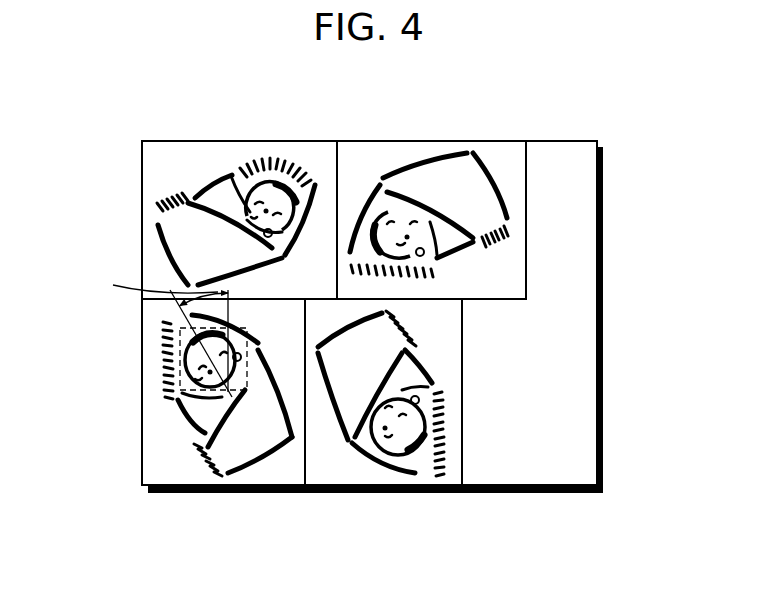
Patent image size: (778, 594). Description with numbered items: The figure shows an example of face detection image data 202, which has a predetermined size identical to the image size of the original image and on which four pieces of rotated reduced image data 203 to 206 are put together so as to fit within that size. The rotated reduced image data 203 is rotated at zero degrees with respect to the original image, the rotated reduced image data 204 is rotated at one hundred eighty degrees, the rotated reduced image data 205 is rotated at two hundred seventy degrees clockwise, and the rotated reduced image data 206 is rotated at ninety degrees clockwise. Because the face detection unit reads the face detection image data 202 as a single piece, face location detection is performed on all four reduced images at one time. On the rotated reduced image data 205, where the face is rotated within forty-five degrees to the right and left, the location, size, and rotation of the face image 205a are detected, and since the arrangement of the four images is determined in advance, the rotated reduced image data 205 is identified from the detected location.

The face detection image data 202 is at (558, 140).
The rotated reduced image data 203 is at (202, 148).
The rotated reduced image data 204 is at (432, 148).
The rotated reduced image data 205 is at (242, 478).
The face image 205a is at (163, 374).
The rotated reduced image data 206 is at (373, 478).